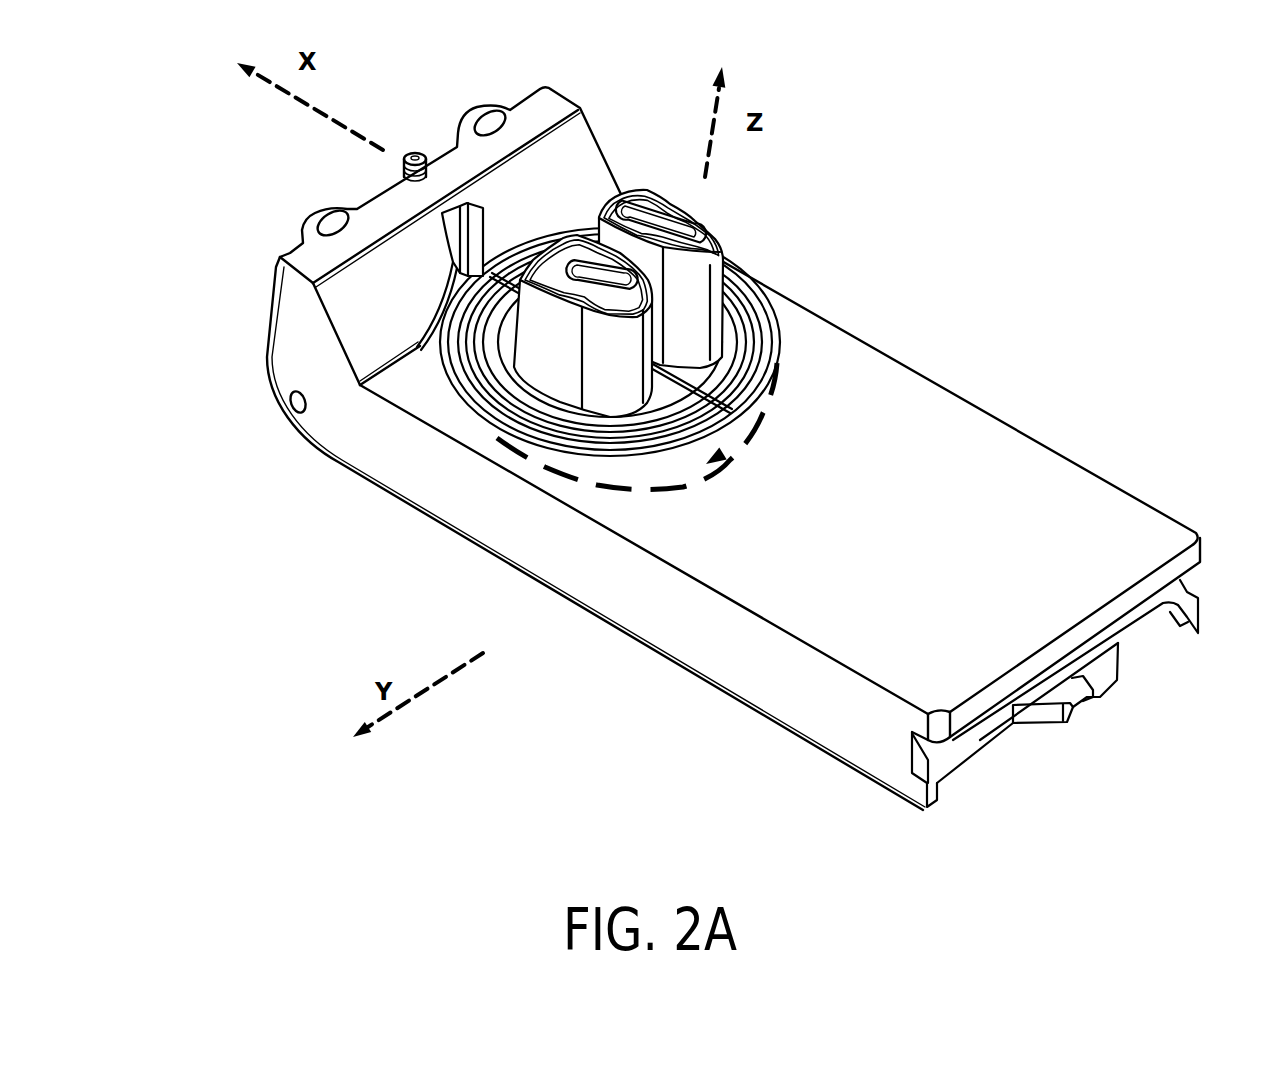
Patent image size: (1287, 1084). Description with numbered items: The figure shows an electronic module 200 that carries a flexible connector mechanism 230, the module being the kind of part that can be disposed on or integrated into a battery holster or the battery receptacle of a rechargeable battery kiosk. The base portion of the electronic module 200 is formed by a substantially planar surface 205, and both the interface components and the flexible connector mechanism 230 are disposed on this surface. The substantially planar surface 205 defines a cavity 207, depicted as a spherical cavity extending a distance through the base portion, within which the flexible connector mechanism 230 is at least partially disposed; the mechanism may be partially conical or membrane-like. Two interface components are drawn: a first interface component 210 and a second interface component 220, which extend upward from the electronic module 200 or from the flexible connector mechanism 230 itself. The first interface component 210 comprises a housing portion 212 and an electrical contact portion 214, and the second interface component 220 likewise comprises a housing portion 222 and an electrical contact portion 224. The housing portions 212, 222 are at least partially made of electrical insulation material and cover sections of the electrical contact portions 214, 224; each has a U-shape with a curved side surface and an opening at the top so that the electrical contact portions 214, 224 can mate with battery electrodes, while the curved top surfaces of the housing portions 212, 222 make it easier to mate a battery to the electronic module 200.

The electronic module 200 is at (983, 772).
The substantially planar surface 205 is at (1054, 514).
The cavity 207 is at (723, 453).
The interface component 210 is at (456, 419).
The housing portion 212 is at (563, 353).
The electrical contact portion 214 is at (577, 263).
The interface component 220 is at (776, 249).
The housing portion 222 is at (791, 311).
The electrical contact portion 224 is at (657, 227).
The flexible connector mechanism 230 is at (726, 301).